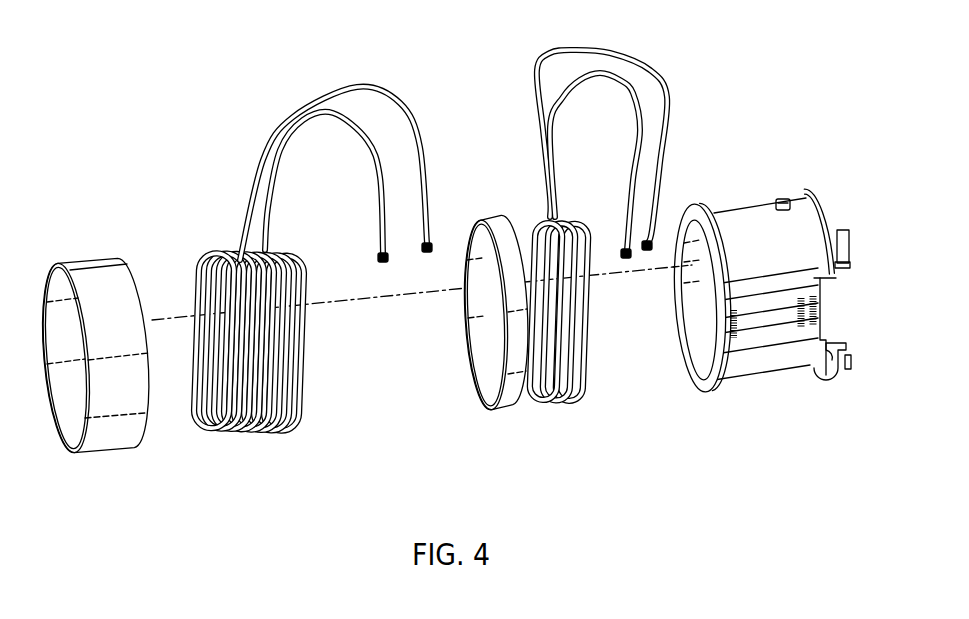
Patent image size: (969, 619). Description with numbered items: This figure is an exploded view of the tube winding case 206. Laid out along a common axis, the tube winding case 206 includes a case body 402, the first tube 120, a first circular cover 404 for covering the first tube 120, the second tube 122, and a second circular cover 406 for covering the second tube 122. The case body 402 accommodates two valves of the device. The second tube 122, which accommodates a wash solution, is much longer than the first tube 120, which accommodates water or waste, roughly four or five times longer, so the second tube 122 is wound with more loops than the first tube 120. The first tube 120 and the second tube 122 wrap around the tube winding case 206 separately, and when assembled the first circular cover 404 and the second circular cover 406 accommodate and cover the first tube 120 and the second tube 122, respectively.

The tube winding case 206 is at (237, 54).
The first tube 120 is at (543, 220).
The second tube 122 is at (218, 258).
The case body 402 is at (748, 222).
The first circular cover 404 is at (518, 384).
The second circular cover 406 is at (121, 434).